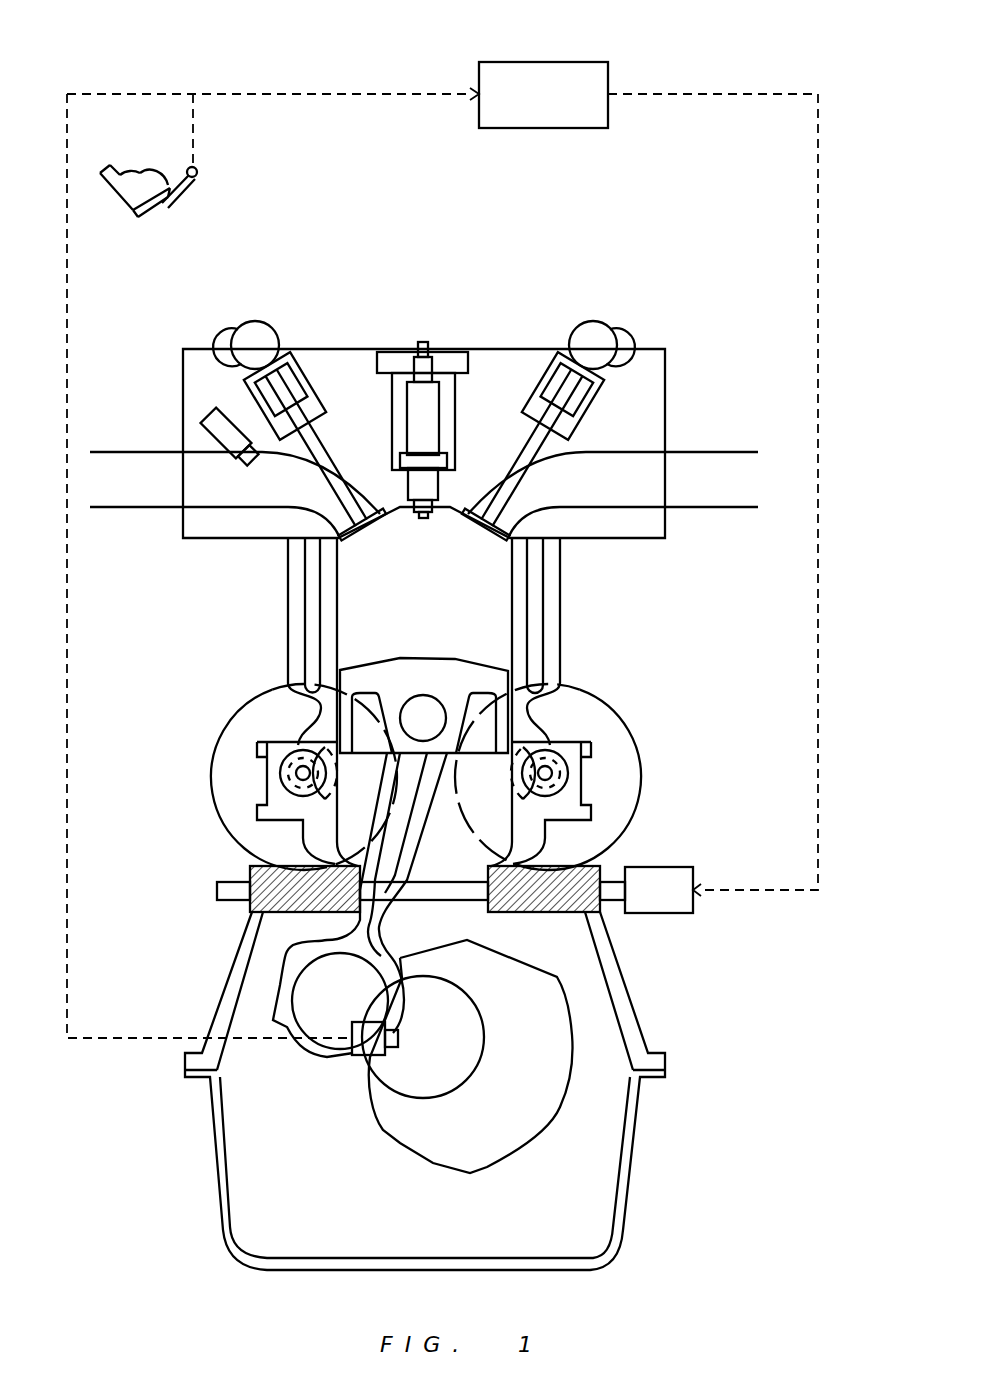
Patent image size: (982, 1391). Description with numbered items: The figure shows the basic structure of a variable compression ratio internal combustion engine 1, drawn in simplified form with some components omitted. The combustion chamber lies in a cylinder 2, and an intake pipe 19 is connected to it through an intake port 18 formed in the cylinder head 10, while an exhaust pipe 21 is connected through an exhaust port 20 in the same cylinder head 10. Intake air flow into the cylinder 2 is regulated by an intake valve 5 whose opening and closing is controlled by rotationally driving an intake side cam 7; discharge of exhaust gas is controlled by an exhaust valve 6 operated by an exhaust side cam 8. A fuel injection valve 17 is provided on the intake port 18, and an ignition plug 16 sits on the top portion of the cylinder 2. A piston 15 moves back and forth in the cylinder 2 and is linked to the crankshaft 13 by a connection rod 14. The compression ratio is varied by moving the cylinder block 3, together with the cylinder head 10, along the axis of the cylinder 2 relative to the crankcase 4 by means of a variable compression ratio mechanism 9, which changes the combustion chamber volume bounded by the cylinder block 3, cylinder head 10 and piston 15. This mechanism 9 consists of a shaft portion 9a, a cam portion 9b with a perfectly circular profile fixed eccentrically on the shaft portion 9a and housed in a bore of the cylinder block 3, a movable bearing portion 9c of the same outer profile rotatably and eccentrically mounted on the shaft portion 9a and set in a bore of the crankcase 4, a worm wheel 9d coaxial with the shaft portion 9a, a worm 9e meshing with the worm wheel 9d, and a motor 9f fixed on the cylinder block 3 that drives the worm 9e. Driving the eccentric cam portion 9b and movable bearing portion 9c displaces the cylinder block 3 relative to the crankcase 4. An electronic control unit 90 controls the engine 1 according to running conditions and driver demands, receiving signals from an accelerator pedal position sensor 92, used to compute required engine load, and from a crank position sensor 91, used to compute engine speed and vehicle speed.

The variable compression ratio internal combustion engine 1 is at (700, 988).
The cylinder 2 is at (337, 618).
The cylinder block 3 is at (562, 582).
The crankcase 4 is at (221, 993).
The intake valve 5 is at (307, 380).
The exhaust valve 6 is at (540, 363).
The intake side cam 7 is at (252, 322).
The exhaust side cam 8 is at (593, 322).
The variable compression ratio mechanism 9 is at (396, 800).
The shaft portion 9a is at (296, 773).
The cam portion 9b is at (300, 752).
The movable bearing portion 9c is at (290, 792).
The worm wheel 9d is at (243, 862).
The worm 9e is at (217, 901).
The motor 9f is at (660, 867).
The cylinder head 10 is at (200, 368).
The crankshaft 13 is at (440, 1063).
The connection rod 14 is at (310, 948).
The piston 15 is at (430, 671).
The ignition plug 16 is at (420, 340).
The fuel injection valve 17 is at (198, 423).
The intake port 18 is at (258, 503).
The intake pipe 19 is at (162, 507).
The exhaust port 20 is at (617, 467).
The exhaust pipe 21 is at (719, 509).
The electronic control unit 90 is at (538, 62).
The crank position sensor 91 is at (350, 1055).
The accelerator pedal position sensor 92 is at (197, 168).